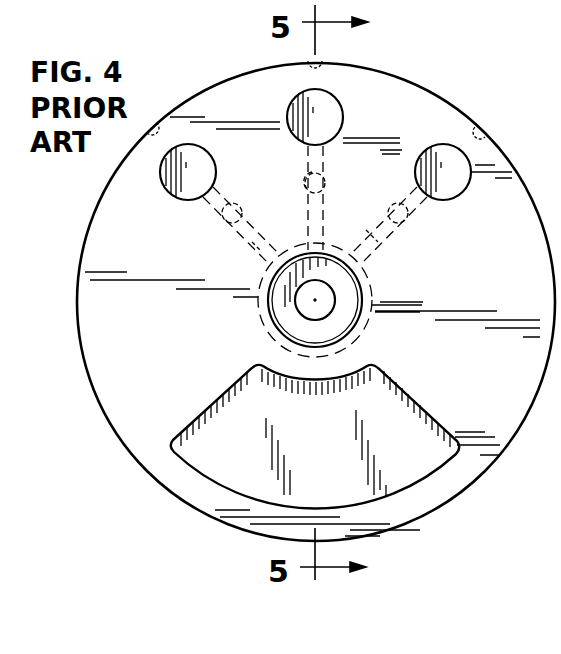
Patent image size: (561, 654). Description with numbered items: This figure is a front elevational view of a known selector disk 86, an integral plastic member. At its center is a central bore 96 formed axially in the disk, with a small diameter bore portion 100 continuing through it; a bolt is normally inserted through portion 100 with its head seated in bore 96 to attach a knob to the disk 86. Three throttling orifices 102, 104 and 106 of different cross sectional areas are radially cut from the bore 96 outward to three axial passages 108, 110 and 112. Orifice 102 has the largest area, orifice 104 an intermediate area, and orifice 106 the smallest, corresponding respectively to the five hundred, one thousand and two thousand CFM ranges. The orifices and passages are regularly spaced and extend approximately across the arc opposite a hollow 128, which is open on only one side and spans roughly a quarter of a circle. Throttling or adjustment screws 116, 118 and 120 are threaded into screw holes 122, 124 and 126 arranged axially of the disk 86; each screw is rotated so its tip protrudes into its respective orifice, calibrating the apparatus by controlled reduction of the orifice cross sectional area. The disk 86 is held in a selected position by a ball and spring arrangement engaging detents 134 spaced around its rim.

The disk 86 is at (208, 79).
The central bore 96 is at (343, 312).
The small diameter bore portion 100 is at (293, 297).
The throttling orifice 102 is at (245, 233).
The throttling orifice 104 is at (306, 200).
The throttling orifice 106 is at (387, 218).
The axial passage 108 is at (178, 196).
The axial passage 110 is at (289, 114).
The axial passage 112 is at (428, 149).
The throttling screw 116 is at (228, 214).
The throttling screw 118 is at (310, 180).
The throttling screw 120 is at (393, 208).
The screw hole 122 is at (242, 215).
The screw hole 124 is at (325, 182).
The screw hole 126 is at (408, 216).
The hollow 128 is at (405, 418).
The detents 134 is at (152, 125).